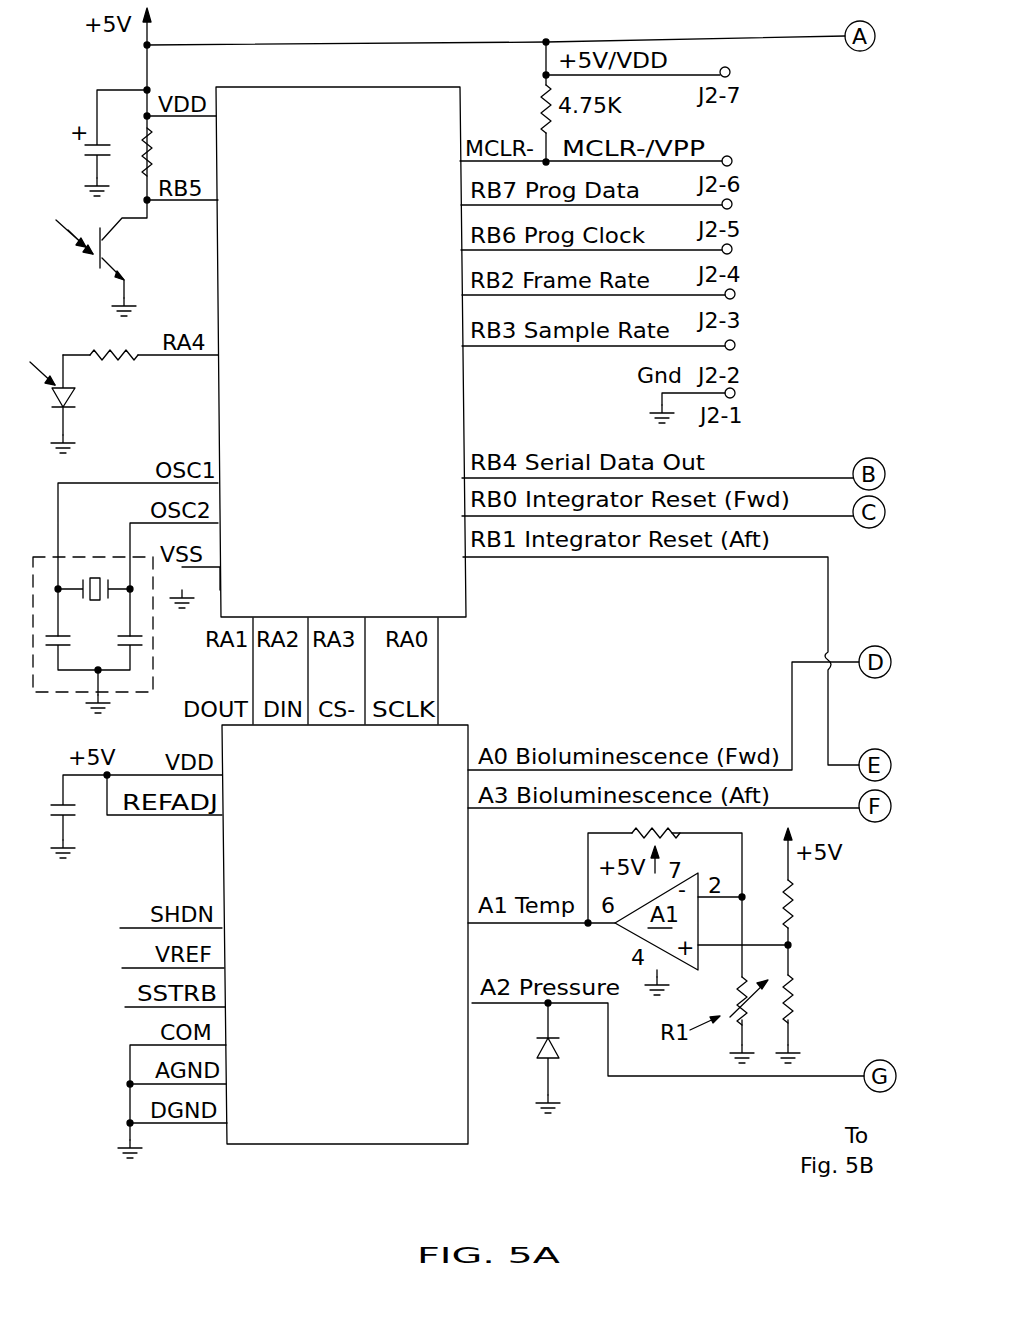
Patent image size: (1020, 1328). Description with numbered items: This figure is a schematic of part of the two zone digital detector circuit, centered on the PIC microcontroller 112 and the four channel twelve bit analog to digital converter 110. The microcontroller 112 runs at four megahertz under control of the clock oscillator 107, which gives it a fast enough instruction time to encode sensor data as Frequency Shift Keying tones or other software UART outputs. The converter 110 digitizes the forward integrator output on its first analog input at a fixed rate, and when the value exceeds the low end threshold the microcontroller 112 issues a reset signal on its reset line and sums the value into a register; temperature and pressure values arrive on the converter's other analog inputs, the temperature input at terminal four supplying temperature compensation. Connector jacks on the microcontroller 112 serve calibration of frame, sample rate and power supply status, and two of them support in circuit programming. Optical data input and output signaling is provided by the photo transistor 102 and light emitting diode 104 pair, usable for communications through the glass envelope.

The photo transistor 102 is at (112, 246).
The light emitting diode 104 is at (80, 398).
The clock oscillator 107 is at (95, 553).
The analog to digital converter 110 is at (357, 926).
The microcontroller 112 is at (352, 340).